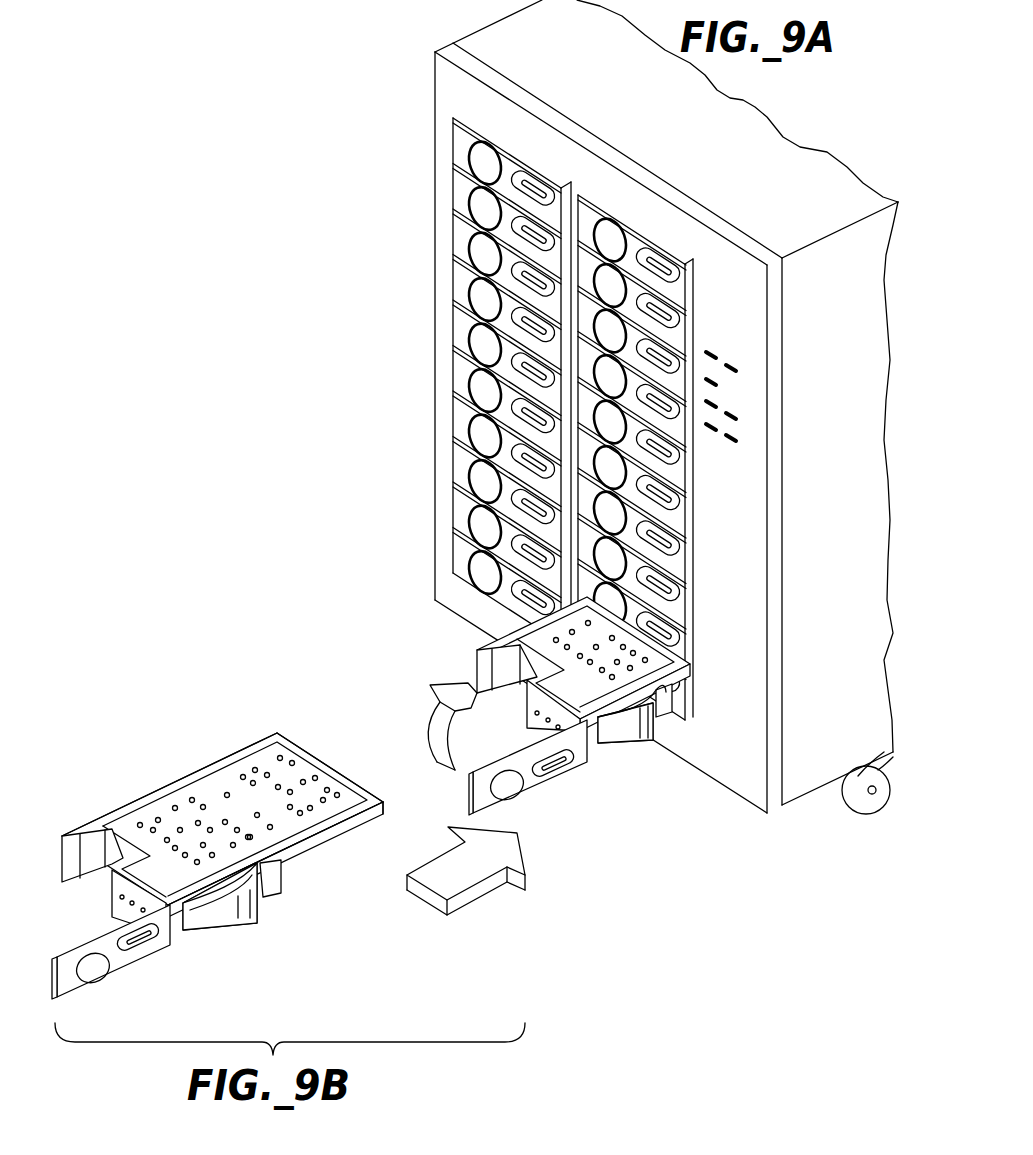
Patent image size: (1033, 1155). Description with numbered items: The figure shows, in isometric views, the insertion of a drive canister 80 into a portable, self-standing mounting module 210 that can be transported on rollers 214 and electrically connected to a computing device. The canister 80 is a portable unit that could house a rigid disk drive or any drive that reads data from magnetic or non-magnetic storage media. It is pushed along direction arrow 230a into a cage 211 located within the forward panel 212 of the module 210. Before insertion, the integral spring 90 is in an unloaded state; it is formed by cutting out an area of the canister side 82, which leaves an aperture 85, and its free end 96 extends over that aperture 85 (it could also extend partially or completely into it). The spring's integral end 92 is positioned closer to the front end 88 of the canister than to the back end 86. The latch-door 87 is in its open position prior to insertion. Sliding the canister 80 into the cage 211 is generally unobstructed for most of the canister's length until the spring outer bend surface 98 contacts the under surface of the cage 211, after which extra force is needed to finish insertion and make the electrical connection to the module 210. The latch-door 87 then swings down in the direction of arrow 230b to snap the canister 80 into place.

In FIG. 9A, the self-standing mounting module 210 is at (795, 118).
In FIG. 9A, the forward panel 212 is at (773, 342).
In FIG. 9A, the rollers 214 is at (851, 812).
In FIG. 9A, the drive canister 80 is at (463, 641).
In FIG. 9B, the drive canister 80 is at (266, 710).
In FIG. 9B, the side 82 is at (362, 840).
In FIG. 9B, the aperture 85 is at (282, 878).
In FIG. 9B, the back end 86 is at (350, 770).
In FIG. 9A, the latch-door 87 is at (531, 787).
In FIG. 9B, the latch-door 87 is at (117, 970).
In FIG. 9B, the front end 88 is at (116, 912).
In FIG. 9A, the spring 90 is at (617, 756).
In FIG. 9B, the spring 90 is at (266, 926).
In FIG. 9B, the integral end 92 is at (175, 948).
In FIG. 9B, the free end 96 is at (257, 858).
In FIG. 9A, the spring outer bend surface 98 is at (641, 752).
In FIG. 9B, the spring outer bend surface 98 is at (247, 928).
In FIG. 9A, the cage 211 is at (655, 742).
In FIG. 9A, the direction arrow 230a is at (497, 898).
In FIG. 9A, the direction arrow 230b is at (438, 722).